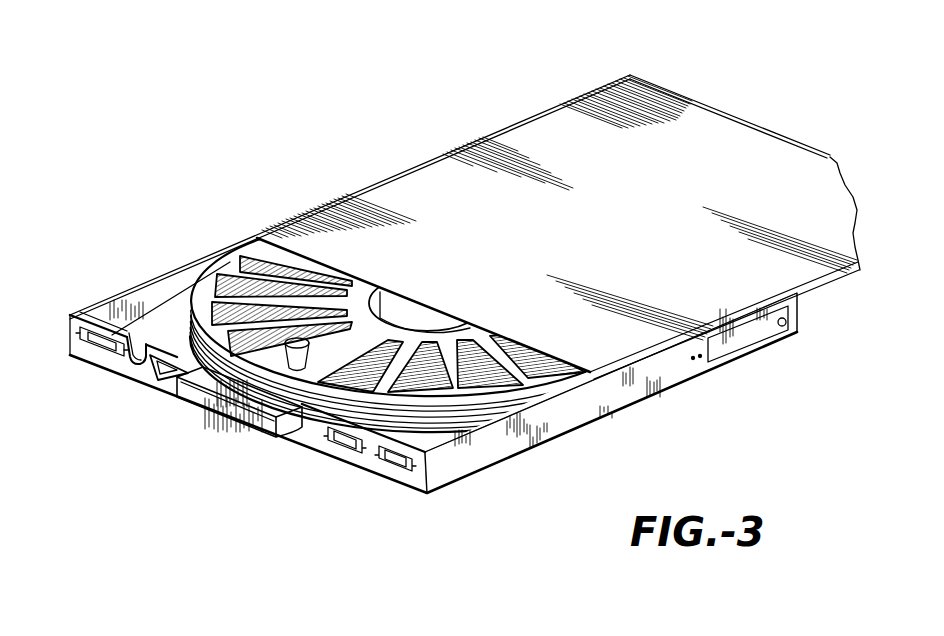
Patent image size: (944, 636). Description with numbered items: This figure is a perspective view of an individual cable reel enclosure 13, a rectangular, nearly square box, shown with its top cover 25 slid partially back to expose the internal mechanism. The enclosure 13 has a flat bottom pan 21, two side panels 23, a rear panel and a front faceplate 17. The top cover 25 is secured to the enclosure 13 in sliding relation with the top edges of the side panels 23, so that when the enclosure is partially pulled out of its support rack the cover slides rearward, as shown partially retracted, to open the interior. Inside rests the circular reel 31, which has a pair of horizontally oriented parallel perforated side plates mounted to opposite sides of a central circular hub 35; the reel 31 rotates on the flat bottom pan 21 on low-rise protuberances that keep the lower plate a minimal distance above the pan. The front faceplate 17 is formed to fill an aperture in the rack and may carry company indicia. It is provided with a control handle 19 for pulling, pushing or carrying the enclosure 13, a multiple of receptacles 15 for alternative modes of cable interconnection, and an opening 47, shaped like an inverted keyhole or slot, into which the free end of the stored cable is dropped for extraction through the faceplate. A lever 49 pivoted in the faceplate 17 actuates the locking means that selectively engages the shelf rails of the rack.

The cable reel enclosure 13 is at (488, 522).
The receptacles 15 is at (347, 443).
The front faceplate 17 is at (308, 432).
The control handle 19 is at (220, 410).
The flat bottom pan 21 is at (143, 330).
The side panels 23 is at (573, 413).
The top cover 25 is at (377, 203).
The reel 31 is at (227, 263).
The central circular hub 35 is at (415, 315).
The opening 47 is at (125, 366).
The lever 49 is at (152, 378).